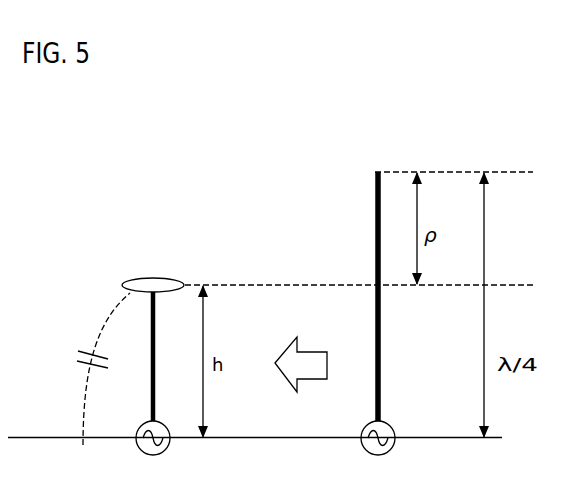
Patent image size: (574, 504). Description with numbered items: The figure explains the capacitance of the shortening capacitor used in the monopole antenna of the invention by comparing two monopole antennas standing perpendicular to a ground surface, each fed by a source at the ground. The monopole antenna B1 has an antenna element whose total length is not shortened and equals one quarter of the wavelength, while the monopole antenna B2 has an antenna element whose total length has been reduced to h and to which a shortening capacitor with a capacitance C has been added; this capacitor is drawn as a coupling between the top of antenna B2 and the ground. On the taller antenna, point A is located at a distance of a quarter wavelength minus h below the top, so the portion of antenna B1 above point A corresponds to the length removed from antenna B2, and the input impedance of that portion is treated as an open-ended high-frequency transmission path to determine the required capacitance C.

The monopole antenna B1 is at (387, 204).
The monopole antenna B2 is at (163, 313).
The capacitance C is at (91, 369).
The point A is at (376, 284).